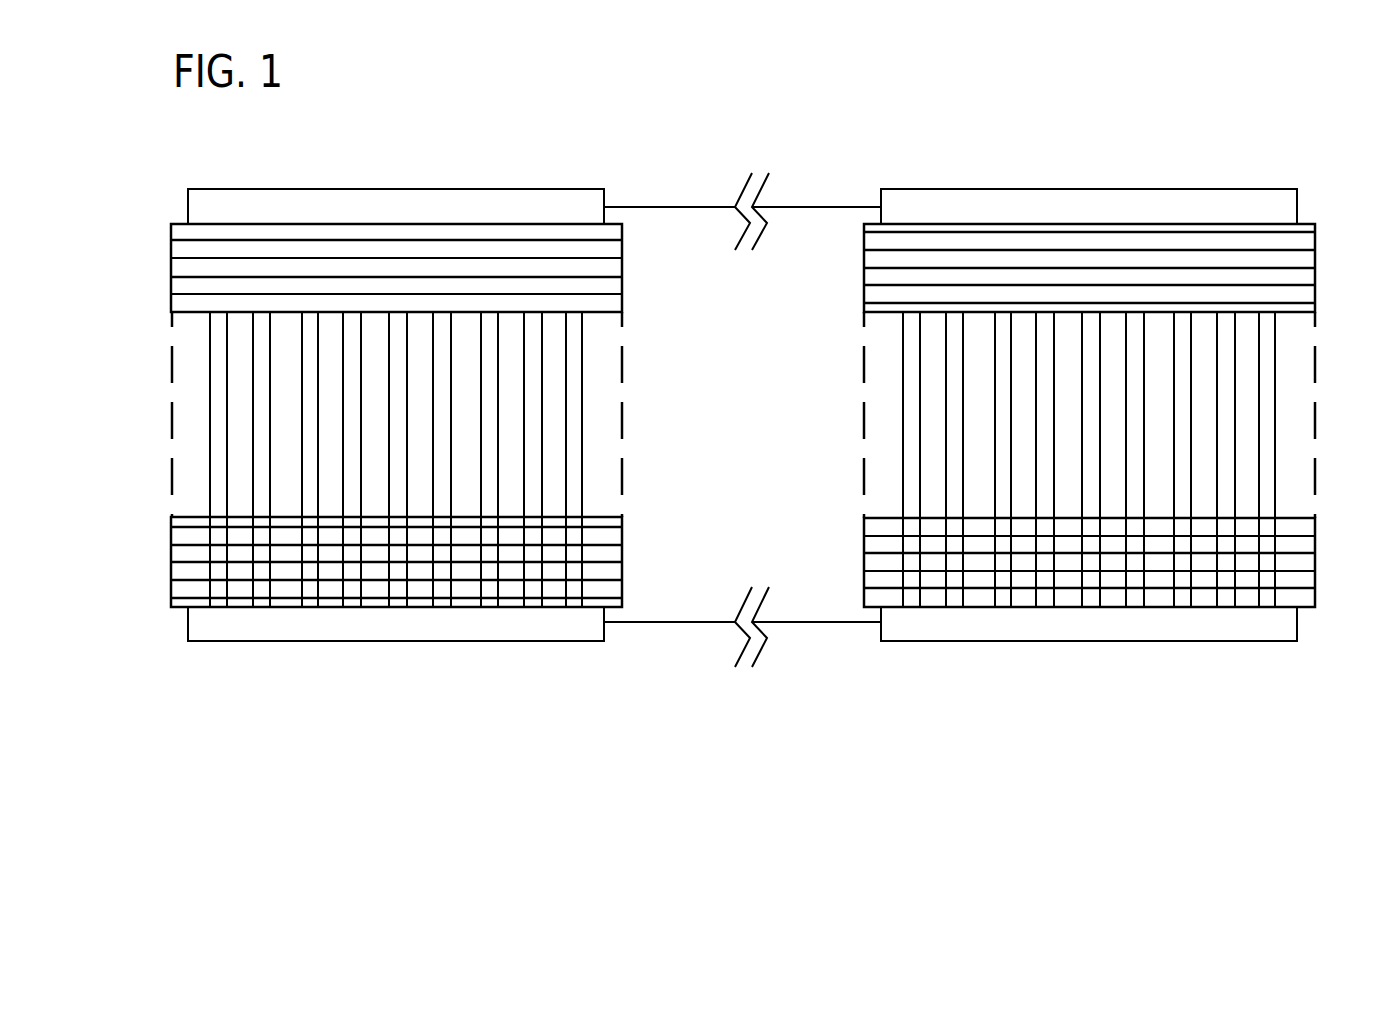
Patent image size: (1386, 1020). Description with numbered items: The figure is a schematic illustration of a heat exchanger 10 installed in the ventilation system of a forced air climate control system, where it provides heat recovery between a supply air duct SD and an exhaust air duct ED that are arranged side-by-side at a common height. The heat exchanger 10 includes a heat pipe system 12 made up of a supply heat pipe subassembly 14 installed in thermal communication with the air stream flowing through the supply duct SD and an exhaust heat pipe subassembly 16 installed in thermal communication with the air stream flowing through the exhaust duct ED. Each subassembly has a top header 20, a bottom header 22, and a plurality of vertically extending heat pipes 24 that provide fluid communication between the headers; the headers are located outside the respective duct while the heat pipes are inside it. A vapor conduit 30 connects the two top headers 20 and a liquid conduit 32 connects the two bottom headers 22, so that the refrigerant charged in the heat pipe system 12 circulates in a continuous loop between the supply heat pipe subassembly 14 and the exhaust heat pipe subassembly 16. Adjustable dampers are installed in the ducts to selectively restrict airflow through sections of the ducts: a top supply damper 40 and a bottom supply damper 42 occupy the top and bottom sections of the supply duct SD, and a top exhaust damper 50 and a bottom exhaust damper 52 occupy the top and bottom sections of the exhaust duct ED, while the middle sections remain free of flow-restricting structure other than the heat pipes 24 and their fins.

The heat exchanger 10 is at (735, 526).
The heat pipe system 12 is at (735, 482).
The supply heat pipe subassembly 14 is at (421, 464).
The exhaust heat pipe subassembly 16 is at (1074, 517).
The top header 20 is at (397, 207).
The bottom header 22 is at (438, 625).
The heat pipes 24 is at (537, 405).
The vapor conduit 30 is at (799, 207).
The liquid conduit 32 is at (812, 622).
The top supply damper 40 is at (193, 320).
The bottom supply damper 42 is at (595, 518).
The top exhaust damper 50 is at (1295, 317).
The bottom exhaust damper 52 is at (885, 517).
The supply air duct SD is at (627, 358).
The exhaust air duct ED is at (862, 510).